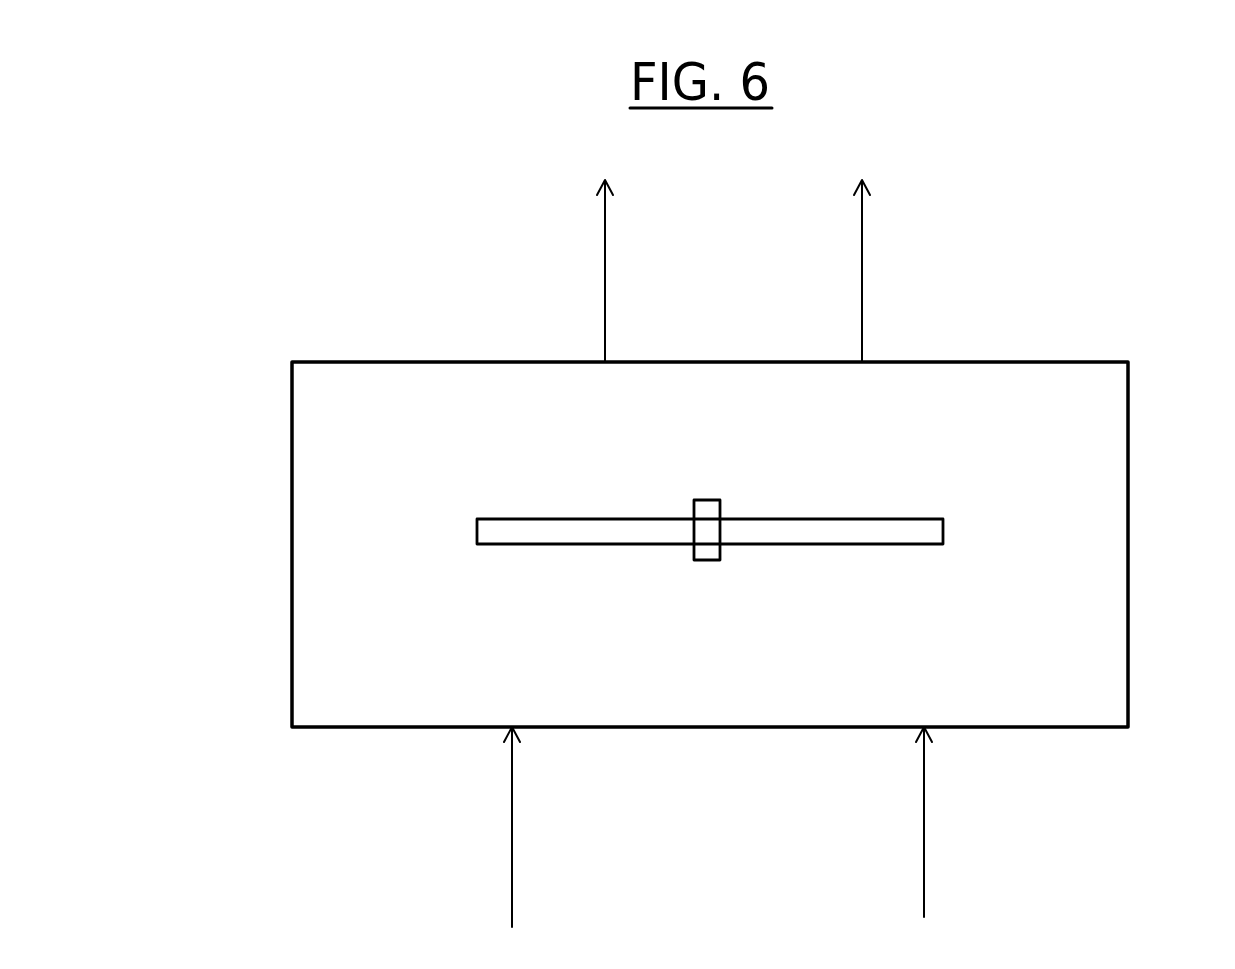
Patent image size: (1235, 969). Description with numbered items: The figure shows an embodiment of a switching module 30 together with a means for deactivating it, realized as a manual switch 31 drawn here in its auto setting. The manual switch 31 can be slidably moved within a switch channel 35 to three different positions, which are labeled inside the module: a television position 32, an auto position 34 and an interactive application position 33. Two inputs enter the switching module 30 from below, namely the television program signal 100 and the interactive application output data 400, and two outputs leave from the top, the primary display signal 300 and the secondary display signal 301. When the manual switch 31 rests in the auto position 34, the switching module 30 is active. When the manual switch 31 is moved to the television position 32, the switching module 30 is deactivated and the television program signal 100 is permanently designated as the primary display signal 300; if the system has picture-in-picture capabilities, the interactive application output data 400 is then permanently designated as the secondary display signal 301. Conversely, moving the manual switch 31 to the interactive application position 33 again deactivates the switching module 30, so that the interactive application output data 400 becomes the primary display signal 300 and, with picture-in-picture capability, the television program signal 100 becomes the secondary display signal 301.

The switching module 30 is at (292, 665).
The manual switch 31 is at (713, 500).
The switch channel 35 is at (943, 532).
The television position 32 is at (535, 612).
The interactive application position 33 is at (908, 637).
The auto position 34 is at (712, 612).
The primary display signal 300 is at (605, 250).
The secondary display signal 301 is at (862, 255).
The television program signal 100 is at (512, 803).
The interactive application output data 400 is at (924, 808).